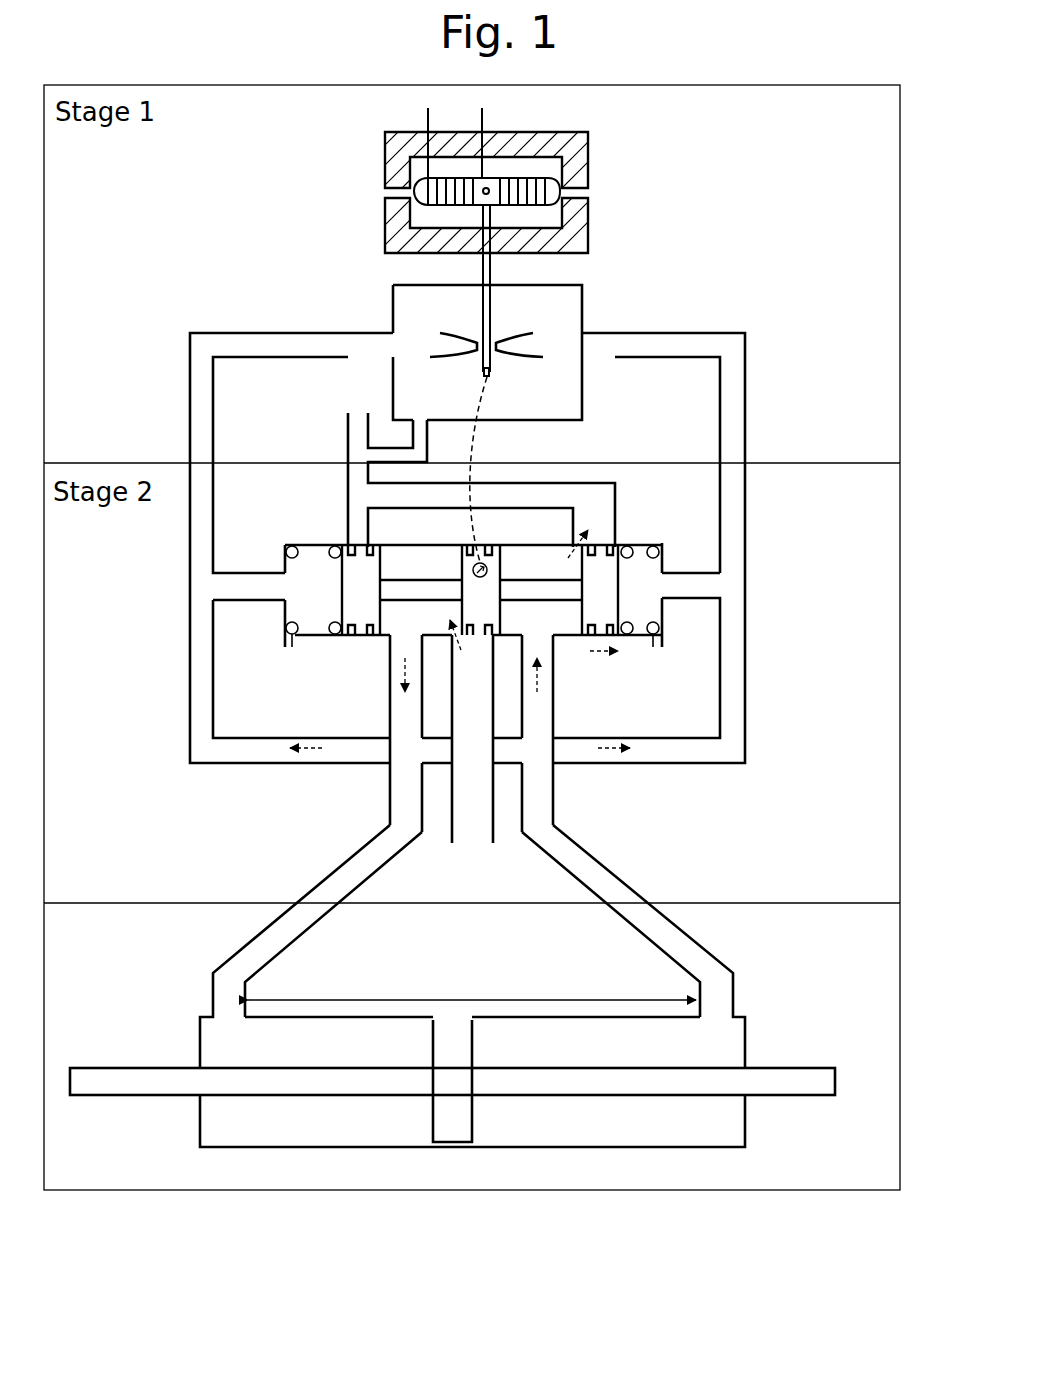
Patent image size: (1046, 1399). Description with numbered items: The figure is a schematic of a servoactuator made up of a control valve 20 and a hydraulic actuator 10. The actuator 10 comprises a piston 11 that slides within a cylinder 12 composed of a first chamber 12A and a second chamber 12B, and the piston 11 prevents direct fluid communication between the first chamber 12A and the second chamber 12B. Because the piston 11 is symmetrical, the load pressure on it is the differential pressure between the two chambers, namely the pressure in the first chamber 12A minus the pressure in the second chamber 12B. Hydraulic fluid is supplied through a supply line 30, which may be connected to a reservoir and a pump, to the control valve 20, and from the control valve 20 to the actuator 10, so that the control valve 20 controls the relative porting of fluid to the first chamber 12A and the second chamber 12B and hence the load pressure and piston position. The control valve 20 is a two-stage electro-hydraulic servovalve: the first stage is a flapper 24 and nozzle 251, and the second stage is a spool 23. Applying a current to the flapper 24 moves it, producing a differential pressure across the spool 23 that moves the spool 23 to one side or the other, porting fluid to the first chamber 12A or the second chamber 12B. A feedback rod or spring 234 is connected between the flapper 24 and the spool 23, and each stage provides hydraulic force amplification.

The hydraulic actuator 10 is at (800, 1003).
The piston 11 is at (723, 1097).
The cylinder 12 is at (258, 1152).
The first chamber 12A is at (372, 1122).
The second chamber 12B is at (610, 1127).
The control valve 20 is at (790, 682).
The spool 23 is at (607, 580).
The flapper 24 is at (492, 265).
The supply line 30 is at (473, 822).
The feedback rod or spring 234 is at (475, 400).
The nozzle 251 is at (458, 341).